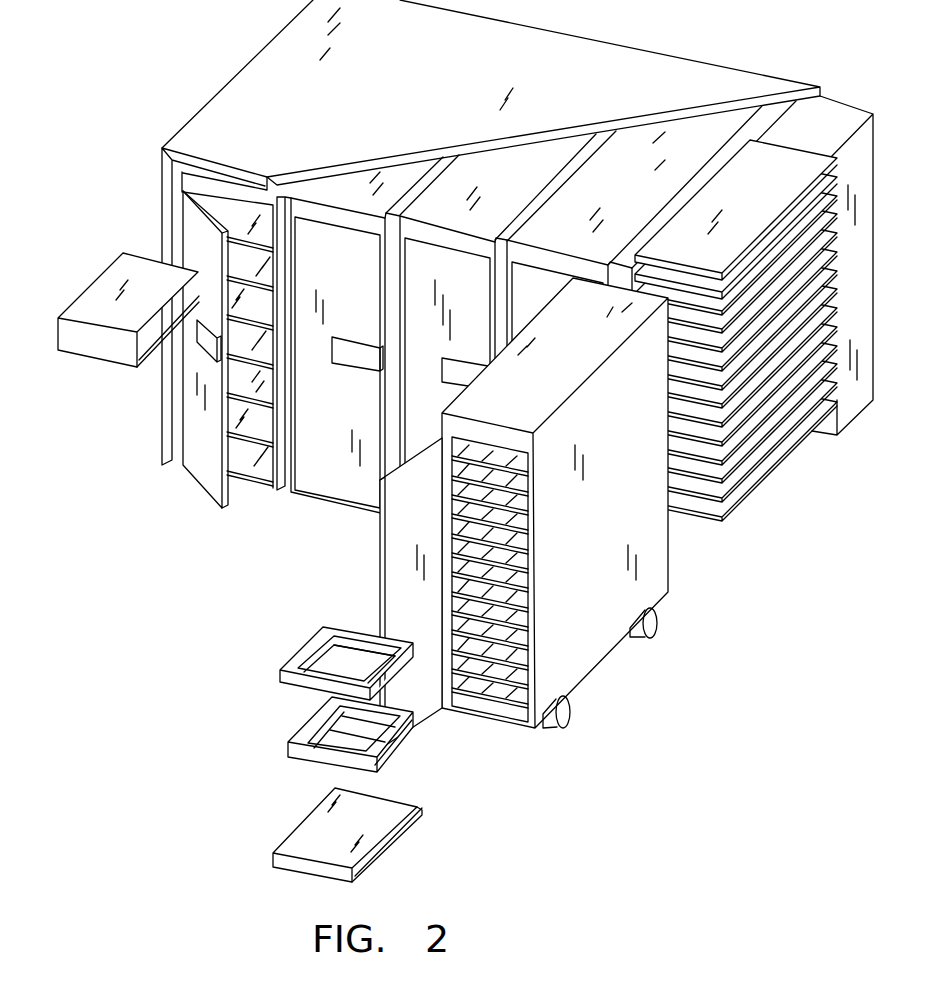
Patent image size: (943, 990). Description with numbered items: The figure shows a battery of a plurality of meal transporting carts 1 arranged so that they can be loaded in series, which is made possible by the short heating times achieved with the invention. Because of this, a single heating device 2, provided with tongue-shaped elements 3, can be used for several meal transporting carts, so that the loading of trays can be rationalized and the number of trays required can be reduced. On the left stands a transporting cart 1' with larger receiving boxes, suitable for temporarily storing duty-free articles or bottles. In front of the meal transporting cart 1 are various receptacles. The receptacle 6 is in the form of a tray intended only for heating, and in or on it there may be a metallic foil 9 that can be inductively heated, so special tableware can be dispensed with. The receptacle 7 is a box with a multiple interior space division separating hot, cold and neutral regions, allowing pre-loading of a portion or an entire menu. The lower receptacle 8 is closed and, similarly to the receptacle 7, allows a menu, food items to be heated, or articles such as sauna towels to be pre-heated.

The meal transporting cart 1 is at (524, 513).
The transporting cart 1' is at (174, 309).
The heating device 2 is at (847, 400).
The tongue-shaped elements 3 is at (760, 184).
The receptacle 6 is at (318, 640).
The receptacle 7 is at (387, 763).
The lower receptacle 8 is at (313, 840).
The metallic foil 9 is at (320, 672).